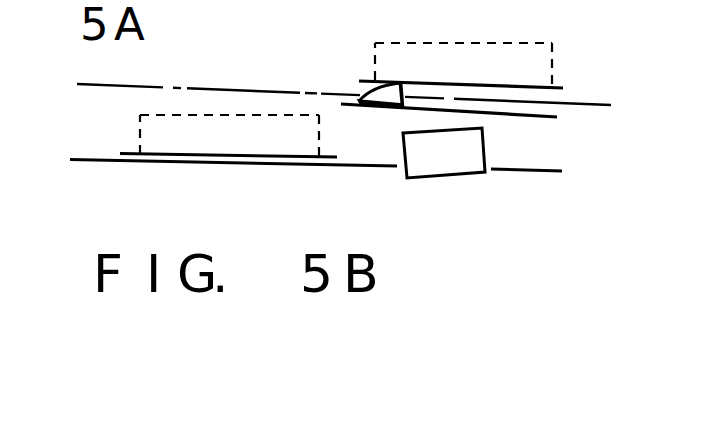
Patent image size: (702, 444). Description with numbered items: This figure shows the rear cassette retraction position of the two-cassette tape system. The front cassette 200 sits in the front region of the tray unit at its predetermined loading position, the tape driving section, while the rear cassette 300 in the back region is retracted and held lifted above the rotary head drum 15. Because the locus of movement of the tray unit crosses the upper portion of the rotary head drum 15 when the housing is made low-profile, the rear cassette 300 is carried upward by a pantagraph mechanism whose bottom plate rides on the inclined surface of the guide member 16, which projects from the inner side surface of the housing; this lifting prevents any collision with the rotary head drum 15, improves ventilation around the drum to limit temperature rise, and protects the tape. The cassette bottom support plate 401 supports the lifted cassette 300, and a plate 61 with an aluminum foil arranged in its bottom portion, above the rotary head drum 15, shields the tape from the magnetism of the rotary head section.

The rotary head drum 15 is at (436, 180).
The guide member 16 is at (364, 99).
The plate with an aluminum foil 61 is at (540, 117).
The front cassette 200 is at (140, 138).
The rear cassette 300 is at (522, 46).
The cassette bottom support plate 401 is at (437, 82).